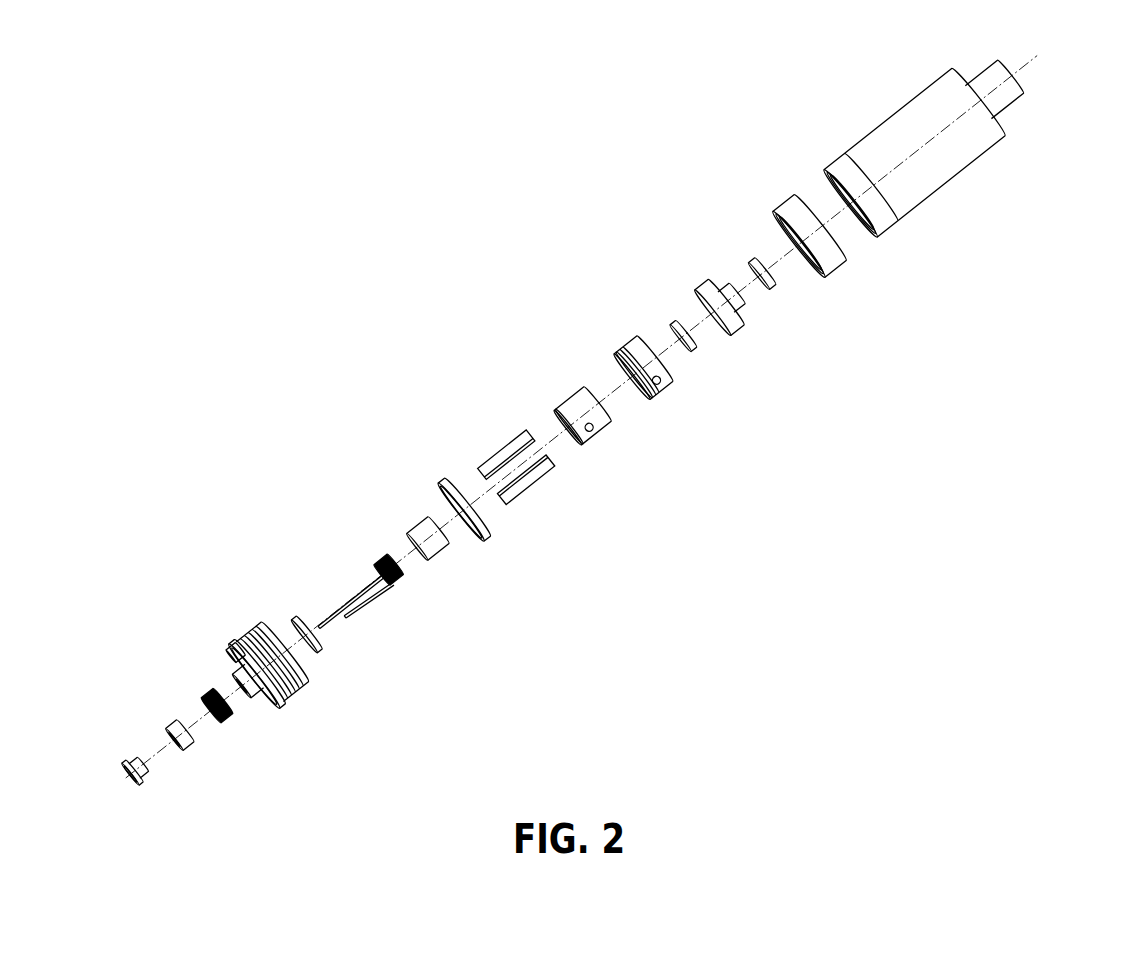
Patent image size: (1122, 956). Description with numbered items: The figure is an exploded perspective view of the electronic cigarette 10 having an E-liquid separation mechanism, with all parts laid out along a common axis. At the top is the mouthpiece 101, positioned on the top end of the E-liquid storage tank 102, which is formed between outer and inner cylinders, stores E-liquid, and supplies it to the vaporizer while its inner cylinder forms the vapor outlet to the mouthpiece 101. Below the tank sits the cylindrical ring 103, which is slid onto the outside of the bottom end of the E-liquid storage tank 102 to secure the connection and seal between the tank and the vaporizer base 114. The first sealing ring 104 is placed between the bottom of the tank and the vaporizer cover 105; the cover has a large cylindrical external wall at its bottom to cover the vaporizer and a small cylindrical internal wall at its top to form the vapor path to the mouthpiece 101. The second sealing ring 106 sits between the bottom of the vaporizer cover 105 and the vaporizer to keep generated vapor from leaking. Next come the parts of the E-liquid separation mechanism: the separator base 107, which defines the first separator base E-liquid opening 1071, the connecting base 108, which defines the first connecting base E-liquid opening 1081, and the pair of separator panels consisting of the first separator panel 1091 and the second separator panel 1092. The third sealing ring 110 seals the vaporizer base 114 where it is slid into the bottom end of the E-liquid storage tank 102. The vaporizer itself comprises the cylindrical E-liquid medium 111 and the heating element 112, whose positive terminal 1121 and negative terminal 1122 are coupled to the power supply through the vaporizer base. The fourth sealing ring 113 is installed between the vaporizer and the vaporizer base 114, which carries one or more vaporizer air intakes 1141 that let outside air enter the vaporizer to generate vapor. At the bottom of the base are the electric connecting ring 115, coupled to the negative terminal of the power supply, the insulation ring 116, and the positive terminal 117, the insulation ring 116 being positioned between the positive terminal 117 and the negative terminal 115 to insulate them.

The electronic cigarette 10 is at (84, 153).
The mouthpiece 101 is at (1009, 102).
The E-liquid storage tank 102 is at (955, 177).
The cylindrical ring 103 is at (845, 262).
The first sealing ring 104 is at (773, 283).
The vaporizer cover 105 is at (735, 327).
The second sealing ring 106 is at (695, 348).
The separator base 107 is at (620, 347).
The first separator base E-liquid opening 1071 is at (657, 388).
The connecting base 108 is at (570, 402).
The first connecting base E-liquid opening 1081 is at (593, 431).
The first separator panel 1091 is at (487, 462).
The second separator panel 1092 is at (538, 483).
The third sealing ring 110 is at (437, 487).
The cylindrical E-liquid medium 111 is at (405, 535).
The heating element 112 is at (400, 574).
The positive terminal 1121 is at (345, 602).
The negative terminal 1122 is at (352, 612).
The fourth sealing ring 113 is at (322, 648).
The vaporizer base 114 is at (258, 628).
The vaporizer air intake 1141 is at (228, 646).
The electric connecting ring 115 is at (200, 698).
The insulation ring 116 is at (164, 733).
The positive terminal 117 is at (134, 767).